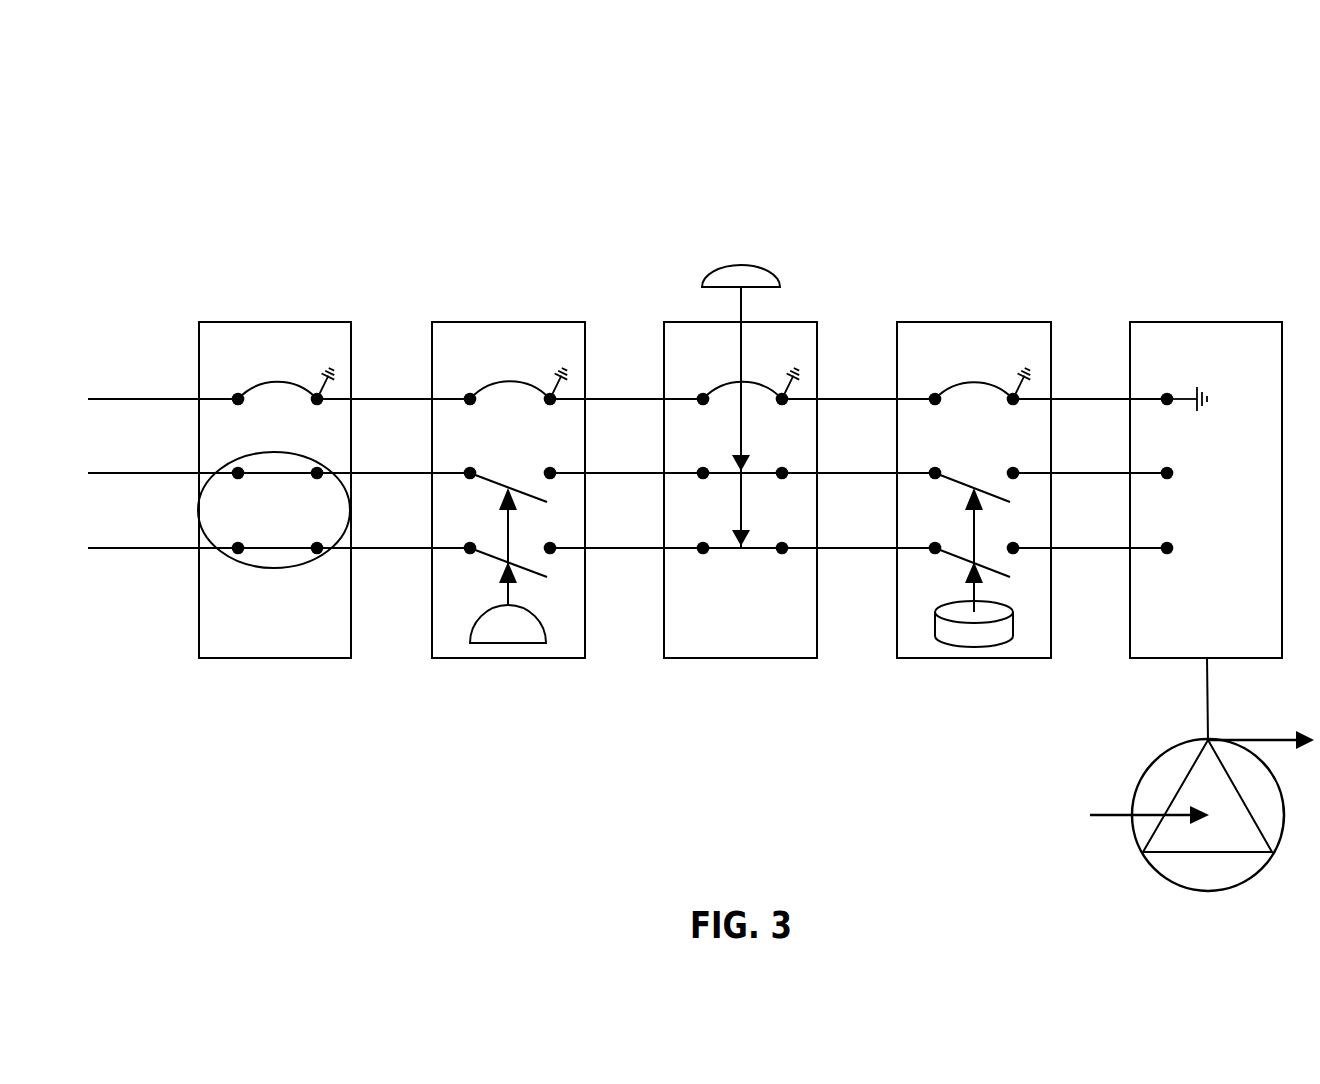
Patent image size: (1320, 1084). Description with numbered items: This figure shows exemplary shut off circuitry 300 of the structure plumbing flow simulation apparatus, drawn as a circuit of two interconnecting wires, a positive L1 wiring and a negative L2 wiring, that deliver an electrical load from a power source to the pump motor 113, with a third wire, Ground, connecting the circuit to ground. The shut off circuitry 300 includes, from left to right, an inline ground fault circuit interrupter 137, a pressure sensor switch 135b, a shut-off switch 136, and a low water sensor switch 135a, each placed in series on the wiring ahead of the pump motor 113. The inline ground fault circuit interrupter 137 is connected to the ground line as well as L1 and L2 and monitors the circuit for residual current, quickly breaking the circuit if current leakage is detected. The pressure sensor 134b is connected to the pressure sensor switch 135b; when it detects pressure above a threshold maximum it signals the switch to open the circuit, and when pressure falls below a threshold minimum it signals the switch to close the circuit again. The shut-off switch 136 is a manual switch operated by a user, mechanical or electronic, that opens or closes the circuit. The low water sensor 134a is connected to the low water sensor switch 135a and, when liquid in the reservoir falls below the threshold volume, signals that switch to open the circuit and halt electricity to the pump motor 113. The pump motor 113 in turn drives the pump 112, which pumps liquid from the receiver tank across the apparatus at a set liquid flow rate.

The shut off circuitry 300 is at (722, 82).
The inline ground fault circuit interrupter 137 is at (257, 306).
The pressure sensor switch 135b is at (484, 306).
The pressure sensor 134b is at (508, 643).
The shut-off switch 136 is at (722, 247).
The low water sensor switch 135a is at (950, 306).
The low water sensor 134a is at (974, 647).
The pump motor 113 is at (1225, 306).
The pump 112 is at (1208, 891).